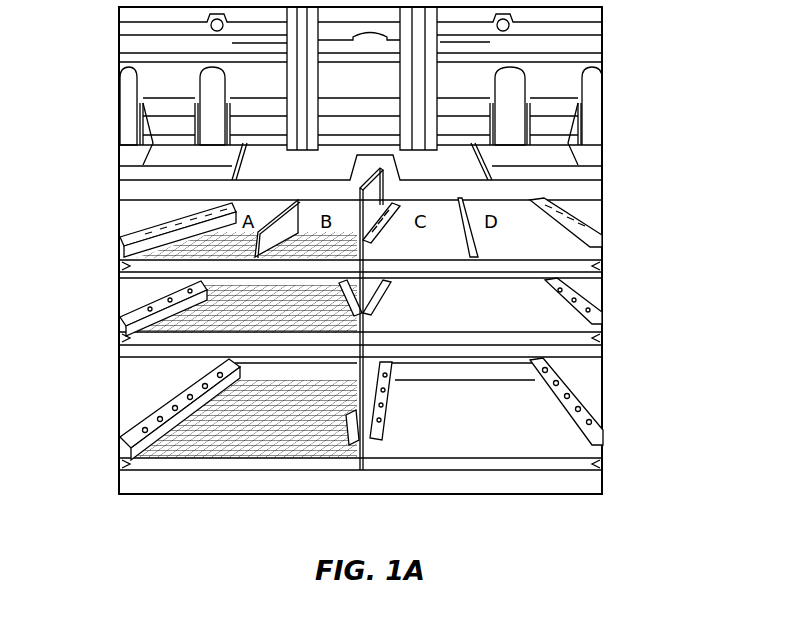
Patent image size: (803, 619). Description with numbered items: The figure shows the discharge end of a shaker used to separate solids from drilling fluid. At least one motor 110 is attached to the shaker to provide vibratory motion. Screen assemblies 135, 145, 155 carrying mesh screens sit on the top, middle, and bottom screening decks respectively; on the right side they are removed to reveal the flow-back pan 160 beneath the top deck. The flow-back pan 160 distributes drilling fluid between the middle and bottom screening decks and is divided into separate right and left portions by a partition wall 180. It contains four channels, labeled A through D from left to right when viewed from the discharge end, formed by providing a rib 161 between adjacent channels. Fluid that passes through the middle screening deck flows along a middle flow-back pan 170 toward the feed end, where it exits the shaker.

The motor 110 is at (555, 83).
The screen assembly 135 is at (207, 243).
The screen assembly 145 is at (178, 313).
The screen assembly 155 is at (187, 437).
The flow-back pan 160 is at (507, 238).
The rib 161 is at (470, 213).
The middle flow-back pan 170 is at (535, 318).
The partition wall 180 is at (363, 393).